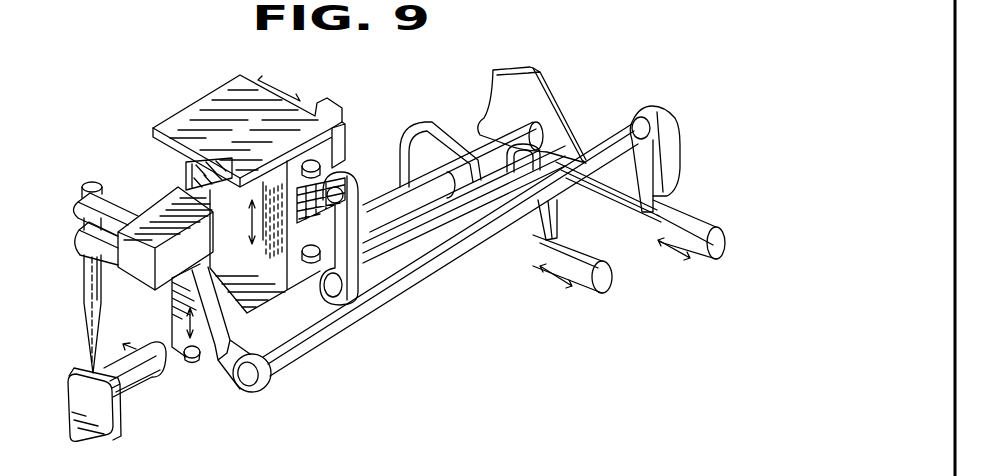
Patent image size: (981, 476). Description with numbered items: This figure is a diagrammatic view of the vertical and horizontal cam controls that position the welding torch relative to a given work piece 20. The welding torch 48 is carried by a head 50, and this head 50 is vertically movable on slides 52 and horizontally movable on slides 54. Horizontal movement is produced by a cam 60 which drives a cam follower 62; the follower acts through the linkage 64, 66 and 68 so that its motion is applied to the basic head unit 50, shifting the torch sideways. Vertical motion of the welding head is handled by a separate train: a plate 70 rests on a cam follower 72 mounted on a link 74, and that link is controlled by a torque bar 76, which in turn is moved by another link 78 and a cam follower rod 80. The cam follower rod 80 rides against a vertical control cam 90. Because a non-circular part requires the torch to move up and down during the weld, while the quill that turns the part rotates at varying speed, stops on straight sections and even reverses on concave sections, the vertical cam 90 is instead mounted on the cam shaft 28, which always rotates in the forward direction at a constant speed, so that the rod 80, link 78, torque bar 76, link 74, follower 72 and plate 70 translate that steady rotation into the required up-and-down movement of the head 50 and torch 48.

The work piece 20 is at (98, 422).
The shaft 28 is at (512, 147).
The welding torch 48 is at (90, 320).
The head 50 is at (192, 92).
The slides 52 is at (188, 168).
The slides 54 is at (318, 160).
The cam 60 is at (426, 125).
The cam follower 62 is at (517, 234).
The linkage 64 is at (558, 220).
The linkage 66 is at (407, 217).
The linkage 68 is at (350, 200).
The plate 70 is at (218, 356).
The cam follower 72 is at (188, 362).
The link 74 is at (240, 381).
The torque bar 76 is at (383, 300).
The link 78 is at (664, 165).
The cam follower rod 80 is at (698, 222).
The vertical control cam 90 is at (525, 98).